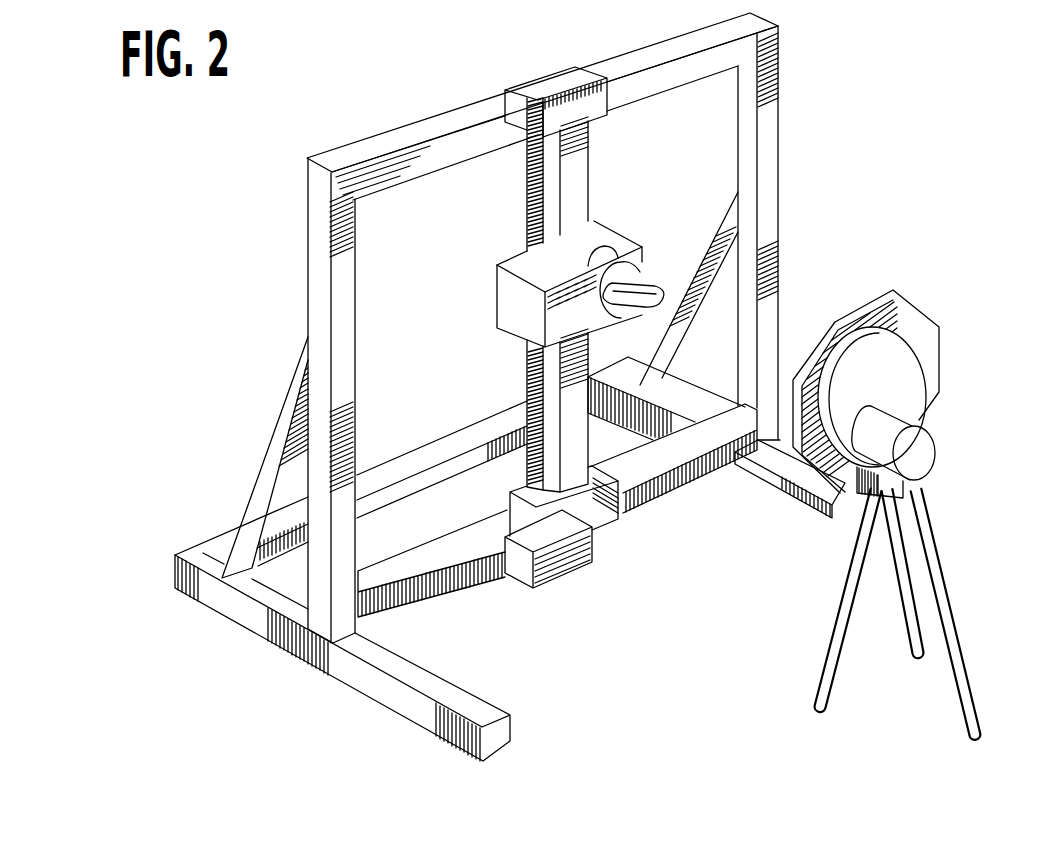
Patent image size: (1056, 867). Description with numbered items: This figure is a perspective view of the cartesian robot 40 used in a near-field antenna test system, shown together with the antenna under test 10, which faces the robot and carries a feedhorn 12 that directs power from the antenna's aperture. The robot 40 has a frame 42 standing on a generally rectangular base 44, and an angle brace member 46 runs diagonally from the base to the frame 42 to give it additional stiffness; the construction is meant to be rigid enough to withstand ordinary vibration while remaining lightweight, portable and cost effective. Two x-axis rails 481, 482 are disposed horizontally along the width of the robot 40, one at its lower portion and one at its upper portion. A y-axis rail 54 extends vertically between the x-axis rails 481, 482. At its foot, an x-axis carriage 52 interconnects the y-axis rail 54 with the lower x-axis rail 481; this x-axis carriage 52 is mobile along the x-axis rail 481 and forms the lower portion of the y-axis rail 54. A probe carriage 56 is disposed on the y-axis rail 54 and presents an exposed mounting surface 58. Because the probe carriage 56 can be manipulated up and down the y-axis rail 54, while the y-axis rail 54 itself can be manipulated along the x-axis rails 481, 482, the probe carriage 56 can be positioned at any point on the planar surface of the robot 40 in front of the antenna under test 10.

The antenna under test 10 is at (950, 448).
The feedhorn 12 is at (910, 368).
The robot 40 is at (473, 328).
The frame 42 is at (317, 276).
The base 44 is at (238, 605).
The angle brace member 46 is at (297, 416).
The x-axis rail 481 is at (647, 470).
The x-axis rail 482 is at (452, 150).
The x-axis carriage 52 is at (603, 525).
The y-axis rail 54 is at (580, 177).
The probe carriage 56 is at (522, 325).
The mounting surface 58 is at (496, 288).